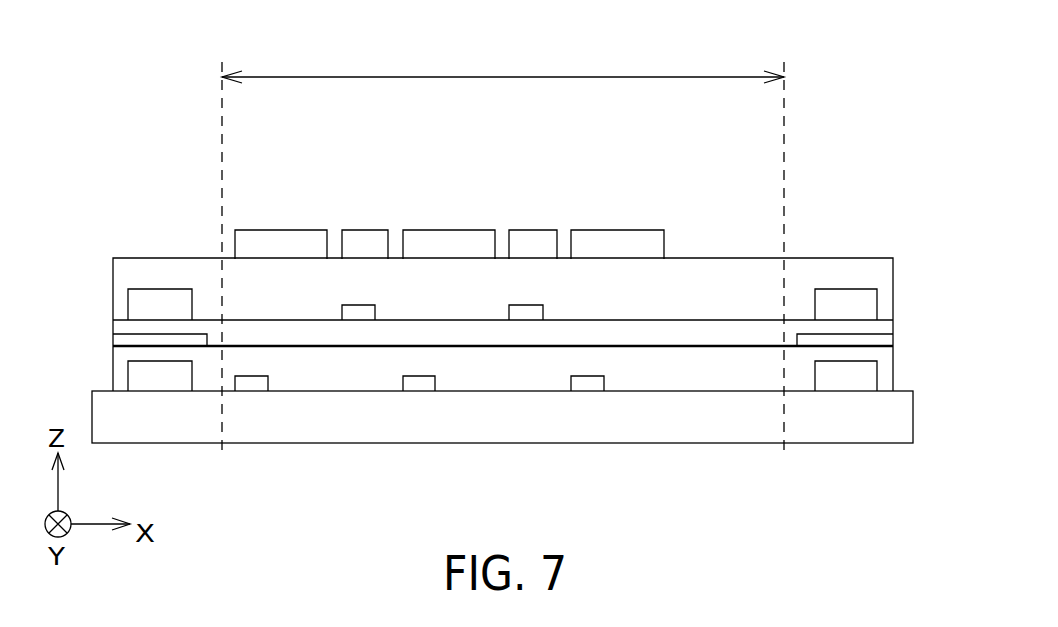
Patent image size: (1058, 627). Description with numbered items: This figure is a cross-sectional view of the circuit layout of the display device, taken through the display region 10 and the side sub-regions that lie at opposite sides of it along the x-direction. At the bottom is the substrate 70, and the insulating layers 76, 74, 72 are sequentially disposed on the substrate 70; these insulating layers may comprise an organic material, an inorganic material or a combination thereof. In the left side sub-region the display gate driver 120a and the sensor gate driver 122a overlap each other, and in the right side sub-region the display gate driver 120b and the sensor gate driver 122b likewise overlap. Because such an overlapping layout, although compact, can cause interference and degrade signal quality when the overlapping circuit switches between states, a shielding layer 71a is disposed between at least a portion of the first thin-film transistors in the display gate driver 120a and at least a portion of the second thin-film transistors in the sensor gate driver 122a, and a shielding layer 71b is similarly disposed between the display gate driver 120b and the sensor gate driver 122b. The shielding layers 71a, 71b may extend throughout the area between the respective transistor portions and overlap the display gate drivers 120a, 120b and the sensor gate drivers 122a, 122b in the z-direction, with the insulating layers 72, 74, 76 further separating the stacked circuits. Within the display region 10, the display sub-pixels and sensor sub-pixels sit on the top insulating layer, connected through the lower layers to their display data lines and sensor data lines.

The display region 10 is at (503, 63).
The substrate 70 is at (730, 431).
The insulating layer 72 is at (730, 300).
The insulating layer 74 is at (750, 330).
The insulating layer 76 is at (730, 381).
The display gate driver 120a is at (140, 302).
The display gate driver 120b is at (865, 302).
The shielding layer 71a is at (130, 336).
The shielding layer 71b is at (873, 342).
The sensor gate driver 122a is at (140, 375).
The sensor gate driver 122b is at (865, 375).